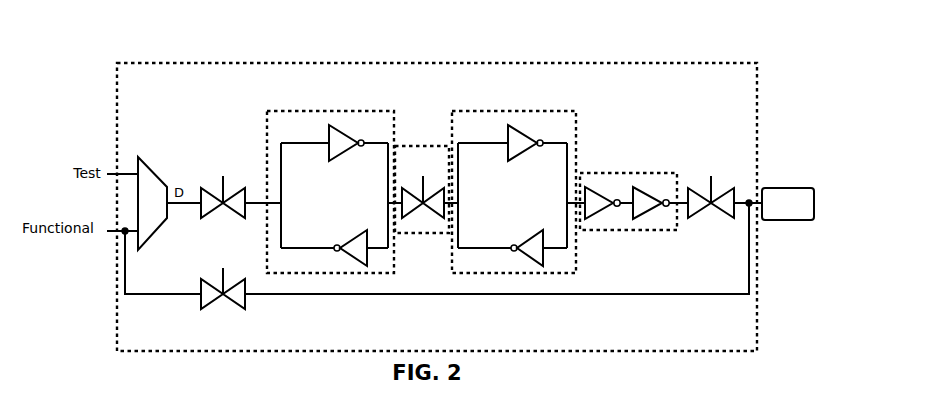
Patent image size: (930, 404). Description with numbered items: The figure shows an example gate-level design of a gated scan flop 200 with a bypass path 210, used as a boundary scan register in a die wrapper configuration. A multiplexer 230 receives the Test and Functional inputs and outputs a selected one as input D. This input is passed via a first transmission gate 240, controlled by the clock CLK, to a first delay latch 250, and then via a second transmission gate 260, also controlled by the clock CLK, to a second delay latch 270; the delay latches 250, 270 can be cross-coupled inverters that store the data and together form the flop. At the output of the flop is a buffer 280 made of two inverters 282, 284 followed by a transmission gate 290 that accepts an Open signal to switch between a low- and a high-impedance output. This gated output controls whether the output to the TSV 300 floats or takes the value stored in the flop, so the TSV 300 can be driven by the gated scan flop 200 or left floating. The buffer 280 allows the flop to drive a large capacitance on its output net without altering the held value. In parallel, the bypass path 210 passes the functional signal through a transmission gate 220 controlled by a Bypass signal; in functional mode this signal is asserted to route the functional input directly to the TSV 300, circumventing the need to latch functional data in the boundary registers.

The gated scan flop 200 is at (114, 98).
The bypass path 210 is at (181, 298).
The transmission gate 220 is at (233, 302).
The multiplexer 230 is at (167, 231).
The first transmission gate 240 is at (211, 188).
The first delay latch 250 is at (313, 108).
The second transmission gate 260 is at (418, 143).
The second delay latch 270 is at (492, 108).
The buffer 280 is at (637, 237).
The inverter 282 is at (595, 222).
The inverter 284 is at (653, 222).
The transmission gate 290 is at (725, 219).
The TSV 300 is at (797, 187).